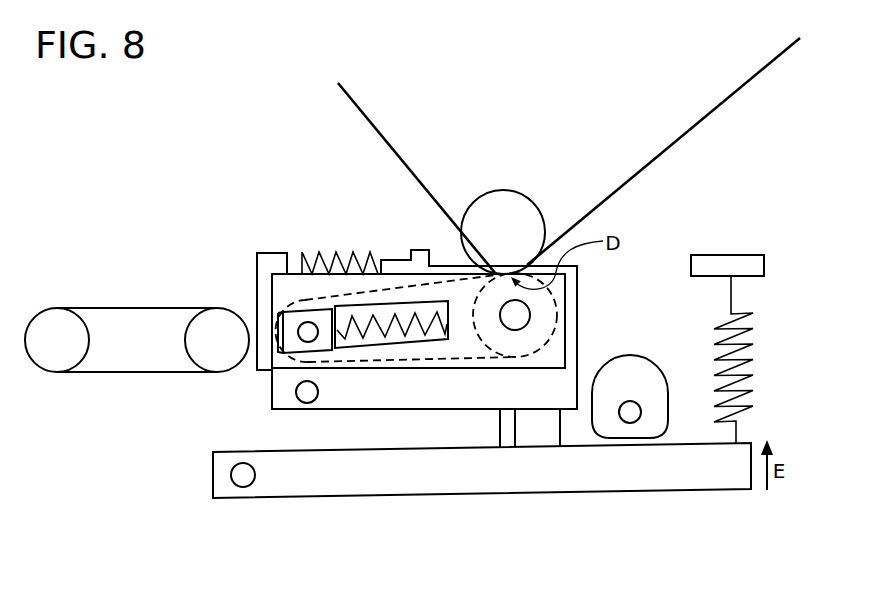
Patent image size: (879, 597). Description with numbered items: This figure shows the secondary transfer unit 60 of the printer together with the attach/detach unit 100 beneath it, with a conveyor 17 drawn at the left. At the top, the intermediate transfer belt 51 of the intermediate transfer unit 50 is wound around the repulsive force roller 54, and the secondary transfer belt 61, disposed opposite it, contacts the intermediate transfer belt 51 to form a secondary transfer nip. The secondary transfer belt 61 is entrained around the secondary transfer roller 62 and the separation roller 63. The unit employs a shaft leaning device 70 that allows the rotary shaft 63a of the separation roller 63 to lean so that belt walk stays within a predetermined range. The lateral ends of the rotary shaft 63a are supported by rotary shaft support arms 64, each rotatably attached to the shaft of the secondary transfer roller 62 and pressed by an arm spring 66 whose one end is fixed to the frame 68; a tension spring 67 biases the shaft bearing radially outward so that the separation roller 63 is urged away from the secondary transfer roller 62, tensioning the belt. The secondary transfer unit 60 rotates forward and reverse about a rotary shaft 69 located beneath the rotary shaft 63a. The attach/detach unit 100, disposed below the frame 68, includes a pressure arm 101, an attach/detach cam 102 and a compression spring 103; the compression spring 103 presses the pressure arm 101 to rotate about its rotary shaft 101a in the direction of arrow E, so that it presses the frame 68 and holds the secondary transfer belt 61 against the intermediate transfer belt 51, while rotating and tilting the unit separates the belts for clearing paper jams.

The conveyor belt 17 is at (132, 375).
The intermediate transfer unit 50 is at (772, 100).
The intermediate transfer belt 51 is at (682, 141).
The repulsive force roller 54 is at (526, 194).
The secondary transfer unit 60 is at (659, 231).
The secondary transfer belt 61 is at (419, 366).
The secondary transfer roller 62 is at (556, 304).
The separation roller 63 is at (290, 296).
The rotary shaft 63a is at (283, 335).
The rotary shaft support arm 64 is at (257, 266).
The arm spring 66 is at (308, 251).
The tension spring 67 is at (407, 322).
The frame 68 is at (578, 353).
The rotary shaft 69 is at (288, 402).
The shaft leaning device 70 is at (256, 183).
The attach/detach unit 100 is at (729, 509).
The pressure arm 101 is at (606, 494).
The rotary shaft 101a is at (243, 488).
The attach/detach cam 102 is at (665, 364).
The compression spring 103 is at (759, 352).